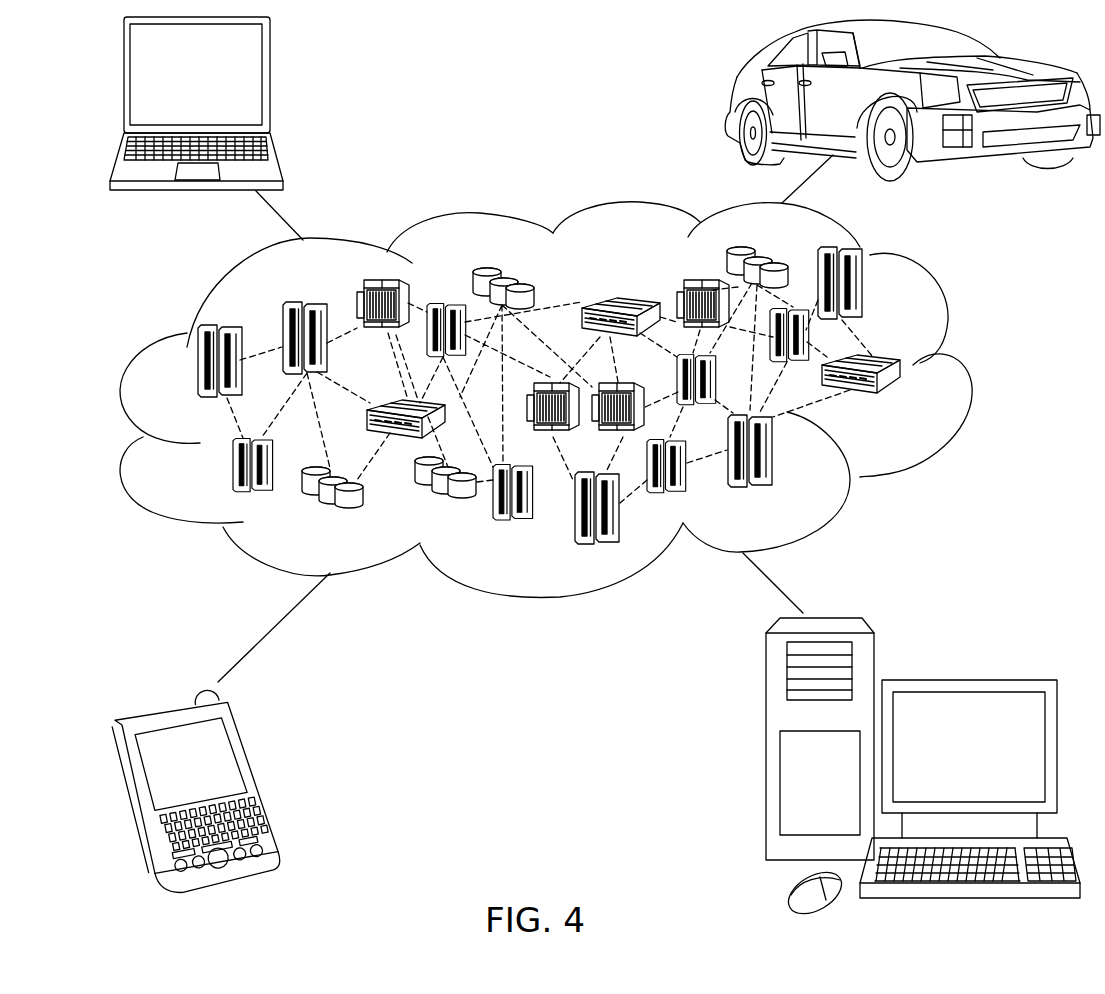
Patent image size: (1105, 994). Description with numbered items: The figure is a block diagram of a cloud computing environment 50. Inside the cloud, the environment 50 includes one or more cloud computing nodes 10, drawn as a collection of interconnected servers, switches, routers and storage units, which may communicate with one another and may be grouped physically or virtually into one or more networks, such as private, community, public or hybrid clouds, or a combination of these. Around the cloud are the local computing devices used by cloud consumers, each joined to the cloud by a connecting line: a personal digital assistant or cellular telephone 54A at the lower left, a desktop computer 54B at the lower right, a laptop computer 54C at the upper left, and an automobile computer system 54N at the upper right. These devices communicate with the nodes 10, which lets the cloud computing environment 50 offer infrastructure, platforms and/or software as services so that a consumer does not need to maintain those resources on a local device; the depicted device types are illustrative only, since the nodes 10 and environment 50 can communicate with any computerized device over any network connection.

The cloud computing nodes 10 is at (916, 408).
The cloud computing environment 50 is at (963, 373).
The personal digital assistant (PDA) or cellular telephone 54A is at (257, 777).
The desktop computer 54B is at (965, 678).
The laptop computer 54C is at (270, 82).
The automobile computer system 54N is at (733, 98).